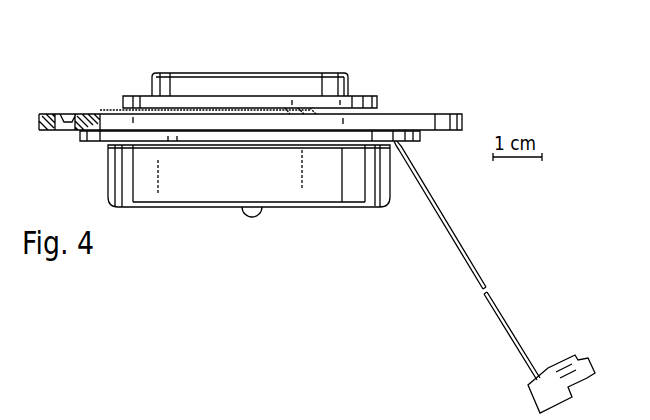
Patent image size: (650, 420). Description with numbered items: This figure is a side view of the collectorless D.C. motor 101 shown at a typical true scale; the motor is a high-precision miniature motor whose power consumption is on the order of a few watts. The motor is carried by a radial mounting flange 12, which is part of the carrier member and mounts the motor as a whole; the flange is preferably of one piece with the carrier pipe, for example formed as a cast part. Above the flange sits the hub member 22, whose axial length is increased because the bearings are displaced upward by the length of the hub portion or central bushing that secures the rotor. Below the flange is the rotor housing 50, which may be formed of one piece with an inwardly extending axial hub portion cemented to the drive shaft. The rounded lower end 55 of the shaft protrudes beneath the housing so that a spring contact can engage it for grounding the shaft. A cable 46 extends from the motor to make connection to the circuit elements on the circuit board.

The measuring head assembly 101 is at (87, 96).
The radial mounting flange 12 is at (430, 113).
The hub member 22 is at (350, 86).
The rotor housing 50 is at (320, 190).
The lower end of shaft 55 is at (252, 213).
The cable 46 is at (456, 231).